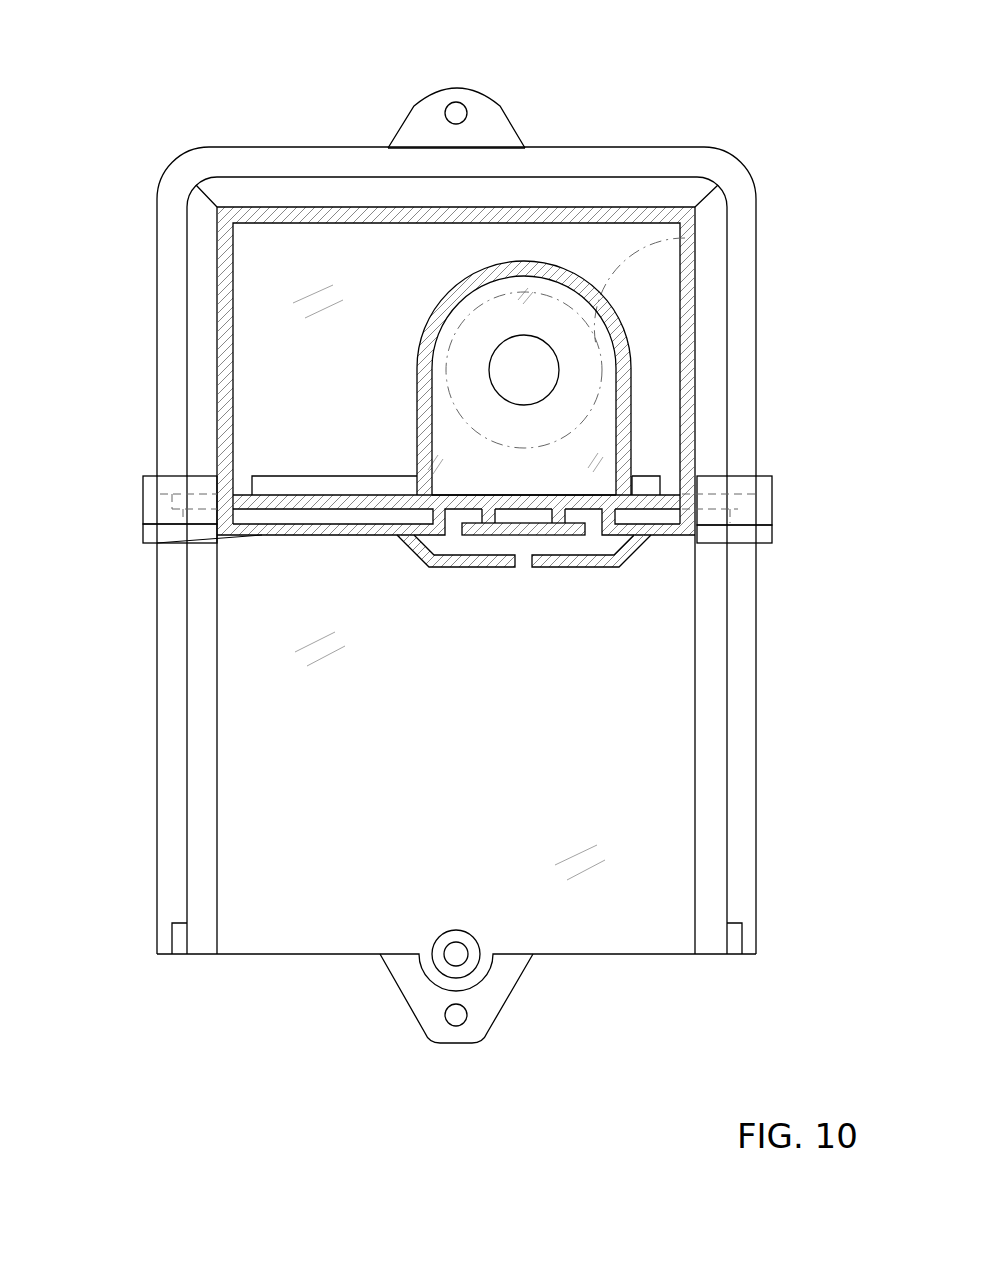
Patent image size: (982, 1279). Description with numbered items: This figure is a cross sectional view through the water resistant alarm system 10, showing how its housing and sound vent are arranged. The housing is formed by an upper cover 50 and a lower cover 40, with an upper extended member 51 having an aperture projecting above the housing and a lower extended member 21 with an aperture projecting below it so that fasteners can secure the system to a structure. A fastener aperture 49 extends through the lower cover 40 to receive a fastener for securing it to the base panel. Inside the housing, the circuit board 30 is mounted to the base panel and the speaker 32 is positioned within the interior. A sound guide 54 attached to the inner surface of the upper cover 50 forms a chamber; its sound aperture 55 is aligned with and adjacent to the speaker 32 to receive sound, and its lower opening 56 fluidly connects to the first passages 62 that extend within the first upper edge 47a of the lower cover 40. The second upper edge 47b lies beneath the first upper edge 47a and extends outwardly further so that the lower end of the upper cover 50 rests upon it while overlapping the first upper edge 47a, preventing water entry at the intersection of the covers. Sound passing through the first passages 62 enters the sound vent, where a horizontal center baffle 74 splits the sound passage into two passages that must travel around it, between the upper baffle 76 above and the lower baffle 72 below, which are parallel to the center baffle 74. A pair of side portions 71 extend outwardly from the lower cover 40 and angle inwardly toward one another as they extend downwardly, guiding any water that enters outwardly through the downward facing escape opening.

The water resistant alarm system 10 is at (408, 503).
The lower extended member 21 is at (456, 1043).
The circuit board 30 is at (385, 265).
The speaker 32 is at (682, 237).
The lower cover 40 is at (157, 822).
The first upper edge 47a is at (303, 493).
The second upper edge 47b is at (270, 537).
The fastener aperture 49 is at (453, 952).
The upper cover 50 is at (618, 147).
The upper extended member 51 is at (455, 87).
The sound guide 54 is at (633, 393).
The sound aperture 55 is at (560, 372).
The lower opening 56 is at (593, 495).
The first passages 62 is at (558, 500).
The side portions 71 is at (405, 552).
The lower baffle 72 is at (487, 567).
The center baffle 74 is at (490, 535).
The upper baffle 76 is at (515, 495).